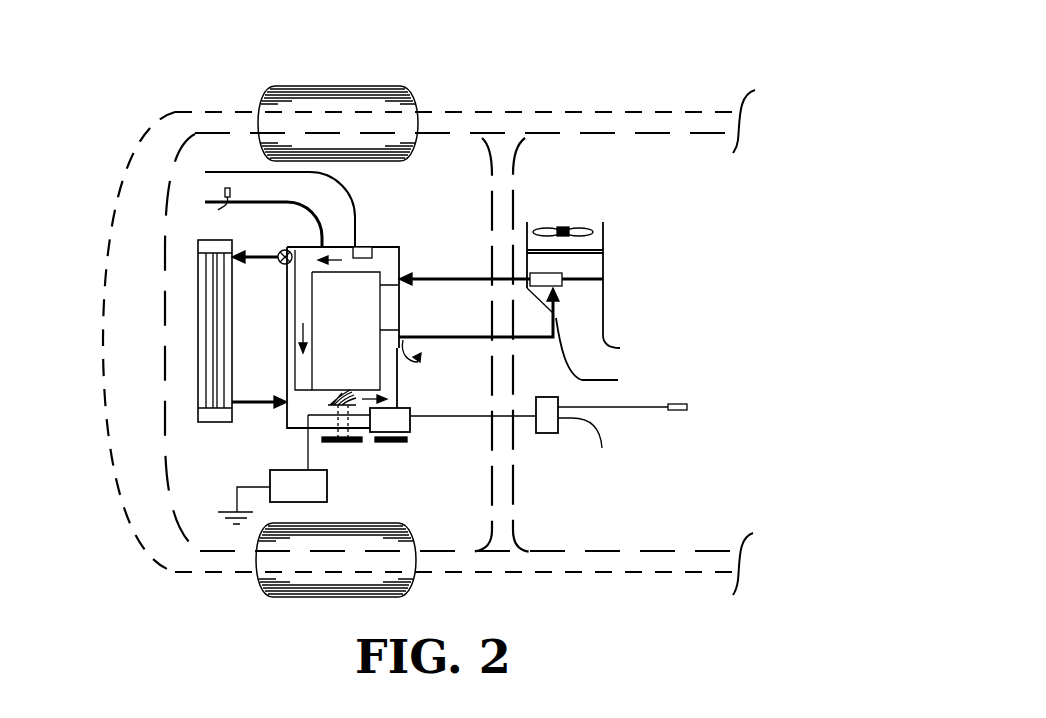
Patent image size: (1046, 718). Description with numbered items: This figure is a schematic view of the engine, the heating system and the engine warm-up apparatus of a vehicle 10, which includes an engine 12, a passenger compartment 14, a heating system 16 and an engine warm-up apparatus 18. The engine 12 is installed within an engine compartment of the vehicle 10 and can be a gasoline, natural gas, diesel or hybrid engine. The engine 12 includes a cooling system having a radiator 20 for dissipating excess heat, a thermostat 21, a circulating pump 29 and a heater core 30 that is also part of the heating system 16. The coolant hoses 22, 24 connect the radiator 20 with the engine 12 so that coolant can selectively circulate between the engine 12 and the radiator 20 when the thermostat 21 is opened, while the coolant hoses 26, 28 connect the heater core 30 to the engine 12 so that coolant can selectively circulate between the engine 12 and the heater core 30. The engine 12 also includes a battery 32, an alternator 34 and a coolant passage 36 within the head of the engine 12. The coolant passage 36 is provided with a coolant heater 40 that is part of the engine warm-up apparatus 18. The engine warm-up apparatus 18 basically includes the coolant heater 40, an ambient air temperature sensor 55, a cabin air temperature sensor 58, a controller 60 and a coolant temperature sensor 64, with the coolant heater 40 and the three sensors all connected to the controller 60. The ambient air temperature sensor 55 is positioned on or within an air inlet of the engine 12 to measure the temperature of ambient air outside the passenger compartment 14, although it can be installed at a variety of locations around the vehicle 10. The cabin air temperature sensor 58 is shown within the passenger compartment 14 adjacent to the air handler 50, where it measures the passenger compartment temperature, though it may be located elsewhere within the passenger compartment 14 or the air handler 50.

The vehicle 10 is at (367, 45).
The engine 12 is at (266, 208).
The passenger compartment 14 is at (680, 118).
The heating system 16 is at (618, 297).
The engine warm-up apparatus 18 is at (556, 446).
The radiator 20 is at (235, 418).
The thermostat 21 is at (281, 251).
The coolant hose 22 is at (258, 262).
The coolant hose 24 is at (252, 398).
The coolant hose 26 is at (455, 335).
The coolant hose 28 is at (455, 277).
The circulating pump 29 is at (350, 393).
The heater core 30 is at (552, 272).
The battery 32 is at (317, 485).
The alternator 34 is at (413, 423).
The coolant passage 36 is at (386, 257).
The coolant heater 40 is at (361, 246).
The air handler 50 is at (573, 208).
The ambient air temperature sensor 55 is at (222, 189).
The cabin air temperature sensor 58 is at (673, 402).
The controller 60 is at (514, 446).
The coolant temperature sensor 64 is at (427, 359).